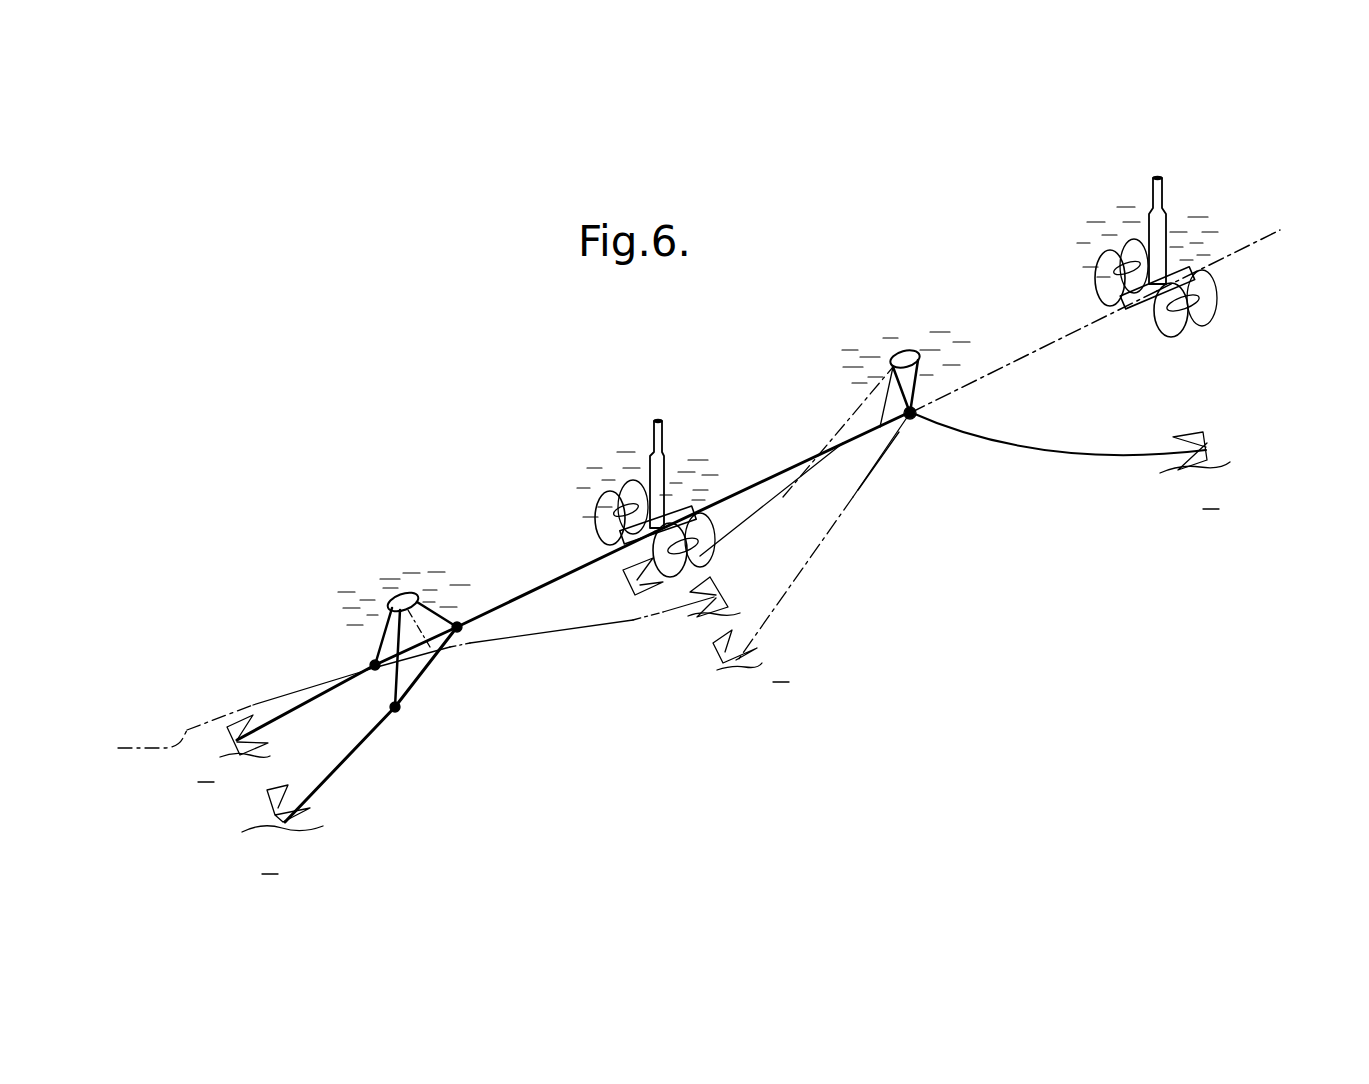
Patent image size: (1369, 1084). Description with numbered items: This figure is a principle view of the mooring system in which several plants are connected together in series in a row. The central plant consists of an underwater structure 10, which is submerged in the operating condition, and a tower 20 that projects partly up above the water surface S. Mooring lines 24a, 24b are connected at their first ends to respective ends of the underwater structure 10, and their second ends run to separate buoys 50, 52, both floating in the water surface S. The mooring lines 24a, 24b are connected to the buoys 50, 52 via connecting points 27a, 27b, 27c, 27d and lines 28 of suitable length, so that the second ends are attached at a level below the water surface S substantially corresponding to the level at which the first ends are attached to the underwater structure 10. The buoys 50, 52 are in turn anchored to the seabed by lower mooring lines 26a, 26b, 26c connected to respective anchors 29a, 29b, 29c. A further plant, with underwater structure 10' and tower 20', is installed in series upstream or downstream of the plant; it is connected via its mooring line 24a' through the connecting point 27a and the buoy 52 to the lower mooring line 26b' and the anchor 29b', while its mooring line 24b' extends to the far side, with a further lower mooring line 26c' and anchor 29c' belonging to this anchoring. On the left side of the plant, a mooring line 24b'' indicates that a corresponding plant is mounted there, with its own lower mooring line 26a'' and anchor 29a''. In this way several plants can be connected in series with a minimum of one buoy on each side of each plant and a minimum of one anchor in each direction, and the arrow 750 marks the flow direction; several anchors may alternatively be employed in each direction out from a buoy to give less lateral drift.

The underwater structure 10 is at (609, 518).
The underwater structure of second plant 10' is at (1206, 315).
The tower 20 is at (668, 434).
The tower of second plant 20' is at (1208, 195).
The mooring line 24a is at (556, 575).
The mooring line 24b is at (782, 477).
The mooring line of second plant 24a' is at (1033, 352).
The mooring line of second plant 24b' is at (1246, 286).
The mooring line of further plant 24b'' is at (253, 704).
The lower mooring line 26a is at (1058, 469).
The lower mooring line 26b is at (371, 724).
The lower mooring line 26c is at (345, 675).
The lower mooring line of second plant 26b' is at (844, 536).
The lower mooring line of second plant 26c' is at (838, 432).
The lower mooring line of further plant 26a'' is at (582, 657).
The connecting point 27a is at (908, 433).
The connecting point 27b is at (402, 710).
The connecting point 27c is at (375, 667).
The connecting point 27d is at (459, 630).
The line 28 is at (918, 398).
The anchor 29a is at (1196, 443).
The anchor 29b is at (310, 831).
The anchor 29c is at (194, 731).
The anchor of second plant 29b' is at (783, 650).
The anchor of second plant 29c' is at (600, 588).
The anchor of further plant 29a'' is at (736, 585).
The buoy 50 is at (410, 592).
The buoy 52 is at (898, 352).
The flow direction arrow 750 is at (669, 605).
The water surface S is at (690, 470).